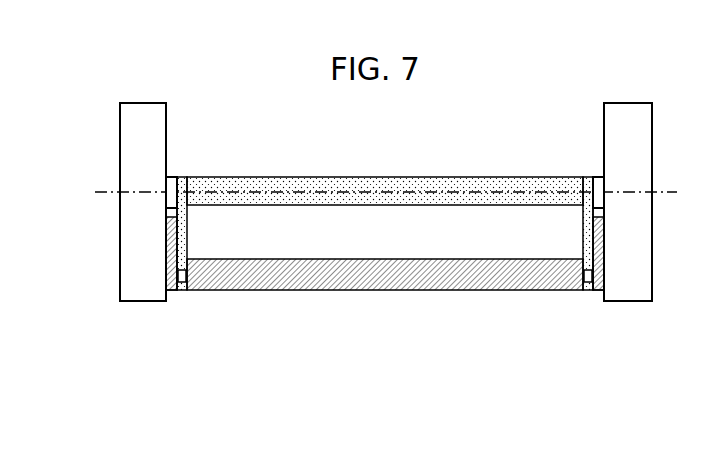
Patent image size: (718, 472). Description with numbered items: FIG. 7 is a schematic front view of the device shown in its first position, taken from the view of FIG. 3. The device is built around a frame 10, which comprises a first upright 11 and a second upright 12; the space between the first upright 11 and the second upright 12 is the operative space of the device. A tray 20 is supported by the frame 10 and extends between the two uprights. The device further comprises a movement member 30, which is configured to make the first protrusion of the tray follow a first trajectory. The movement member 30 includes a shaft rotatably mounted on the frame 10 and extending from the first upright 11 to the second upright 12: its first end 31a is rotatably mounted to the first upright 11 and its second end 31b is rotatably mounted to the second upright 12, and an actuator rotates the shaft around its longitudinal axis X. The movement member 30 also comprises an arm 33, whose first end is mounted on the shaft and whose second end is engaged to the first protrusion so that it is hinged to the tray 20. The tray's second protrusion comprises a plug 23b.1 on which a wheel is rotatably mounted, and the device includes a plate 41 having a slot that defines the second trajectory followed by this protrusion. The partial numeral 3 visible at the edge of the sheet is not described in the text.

The frame 10 is at (537, 118).
The first upright 11 is at (130, 290).
The second upright 12 is at (630, 280).
The tray 20 is at (348, 277).
The movement member 30 is at (254, 185).
The arm 33 is at (182, 175).
The first end 31a is at (170, 175).
The second end 31b is at (597, 187).
The plate 41 is at (170, 295).
The plug 23b.1 is at (182, 285).
The partial numeral 3 is at (713, 110).